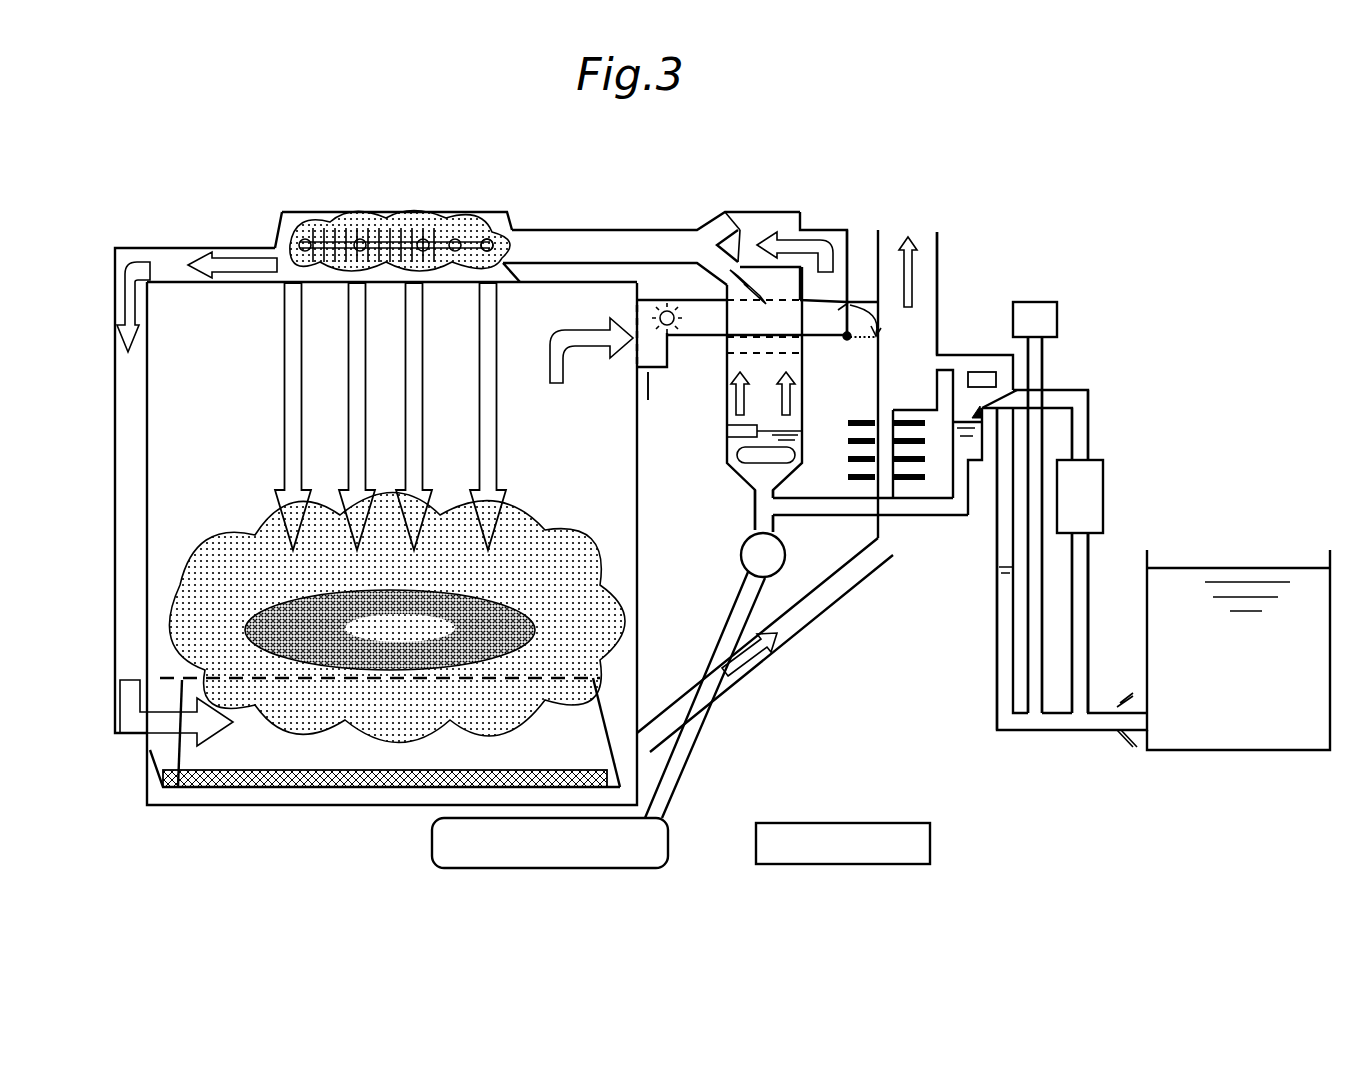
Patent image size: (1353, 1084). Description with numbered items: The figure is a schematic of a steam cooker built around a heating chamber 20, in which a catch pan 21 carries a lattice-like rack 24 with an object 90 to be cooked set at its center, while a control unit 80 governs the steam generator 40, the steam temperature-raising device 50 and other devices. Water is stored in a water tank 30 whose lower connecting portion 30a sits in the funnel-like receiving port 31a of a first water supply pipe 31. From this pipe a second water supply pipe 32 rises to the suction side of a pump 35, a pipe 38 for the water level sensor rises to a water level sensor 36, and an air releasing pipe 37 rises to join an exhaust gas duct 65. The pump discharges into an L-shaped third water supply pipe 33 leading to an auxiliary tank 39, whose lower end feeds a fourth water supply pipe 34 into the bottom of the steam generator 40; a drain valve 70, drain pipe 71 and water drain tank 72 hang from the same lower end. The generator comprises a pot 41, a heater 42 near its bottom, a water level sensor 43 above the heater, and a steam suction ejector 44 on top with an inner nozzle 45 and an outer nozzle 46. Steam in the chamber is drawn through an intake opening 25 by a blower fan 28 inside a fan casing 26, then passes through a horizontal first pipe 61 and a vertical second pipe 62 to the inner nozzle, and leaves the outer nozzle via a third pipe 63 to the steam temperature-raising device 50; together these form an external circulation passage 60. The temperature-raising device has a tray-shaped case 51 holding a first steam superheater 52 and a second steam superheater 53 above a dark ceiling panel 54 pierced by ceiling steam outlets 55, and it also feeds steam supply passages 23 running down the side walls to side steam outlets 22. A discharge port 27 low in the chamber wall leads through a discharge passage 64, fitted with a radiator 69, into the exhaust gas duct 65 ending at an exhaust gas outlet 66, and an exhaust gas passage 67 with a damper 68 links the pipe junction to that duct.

The heating chamber 20 is at (178, 432).
The catch pan 21 is at (243, 785).
The side steam outlets 22 is at (155, 672).
The steam supply passages 23 is at (182, 248).
The lattice-like rack 24 is at (273, 680).
The intake opening 25 is at (636, 342).
The fan casing 26 is at (648, 385).
The discharge port 27 is at (643, 735).
The blower fan 28 is at (682, 316).
The water tank 30 is at (1237, 752).
The connecting portion 30a is at (1137, 755).
The first water supply pipe 31 is at (1033, 733).
The funnel-like receiving port 31a is at (1120, 743).
The second water supply pipe 32 is at (1088, 575).
The third water supply pipe 33 is at (1089, 427).
The fourth water supply pipe 34 is at (915, 518).
The pump 35 is at (1104, 490).
The water level sensor 36 is at (1058, 312).
The air releasing pipe 37 is at (997, 660).
The pipe for the water level sensor 38 is at (1042, 381).
The auxiliary tank 39 is at (977, 470).
The steam generator 40 is at (790, 190).
The pot 41 is at (727, 412).
The heater 42 is at (757, 495).
The water level sensor 43 is at (740, 456).
The steam suction ejector 44 is at (695, 227).
The inner nozzle 45 is at (745, 229).
The outer nozzle 46 is at (735, 214).
The steam temperature-raising device 50 is at (300, 206).
The tray-shaped case 51 is at (400, 240).
The first steam superheater 52 is at (377, 228).
The second steam superheater 53 is at (480, 243).
The ceiling panel 54 is at (378, 284).
The ceiling steam outlets 55 is at (305, 284).
The external circulation passage 60 is at (815, 222).
The first pipe 61 is at (703, 338).
The second pipe 62 is at (848, 270).
The third pipe 63 is at (585, 228).
The discharge passage 64 is at (800, 632).
The exhaust gas duct 65 is at (938, 290).
The exhaust gas outlet 66 is at (925, 240).
The exhaust gas passage 67 is at (857, 342).
The damper 68 is at (838, 330).
The radiator 69 is at (850, 458).
The drain valve 70 is at (742, 562).
The drain pipe 71 is at (703, 762).
The water drain tank 72 is at (558, 868).
The control unit 80 is at (843, 866).
The object to be cooked 90 is at (205, 605).